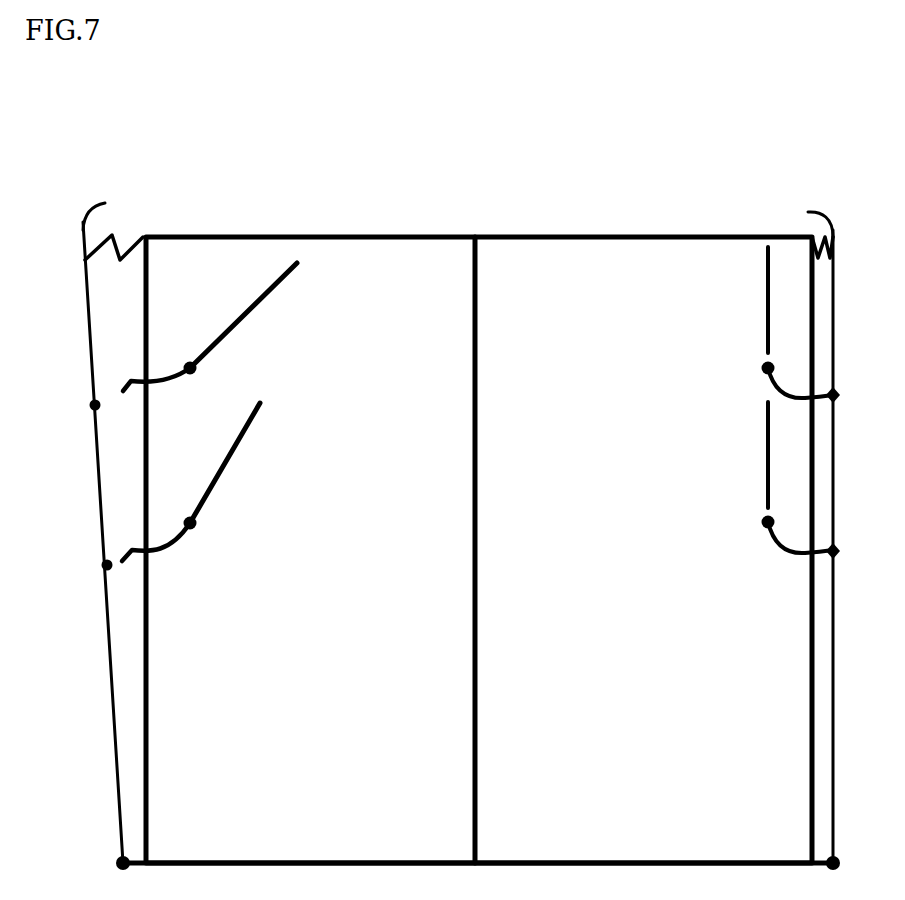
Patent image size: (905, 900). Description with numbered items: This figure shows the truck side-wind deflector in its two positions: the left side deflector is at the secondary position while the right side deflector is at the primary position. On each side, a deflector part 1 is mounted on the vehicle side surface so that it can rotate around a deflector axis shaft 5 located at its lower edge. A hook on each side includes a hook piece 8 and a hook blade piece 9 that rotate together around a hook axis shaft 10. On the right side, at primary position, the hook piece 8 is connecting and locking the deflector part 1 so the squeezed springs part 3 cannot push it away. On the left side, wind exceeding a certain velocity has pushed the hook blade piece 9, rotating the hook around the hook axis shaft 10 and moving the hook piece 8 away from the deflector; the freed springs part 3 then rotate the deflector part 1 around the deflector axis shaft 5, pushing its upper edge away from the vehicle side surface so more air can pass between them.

The deflector part 1 is at (101, 497).
The springs part 3 is at (123, 232).
The deflector axis shaft 5 is at (120, 862).
The hook piece 8 is at (160, 380).
The hook blade piece 9 is at (267, 297).
The hook axis shaft 10 is at (192, 362).